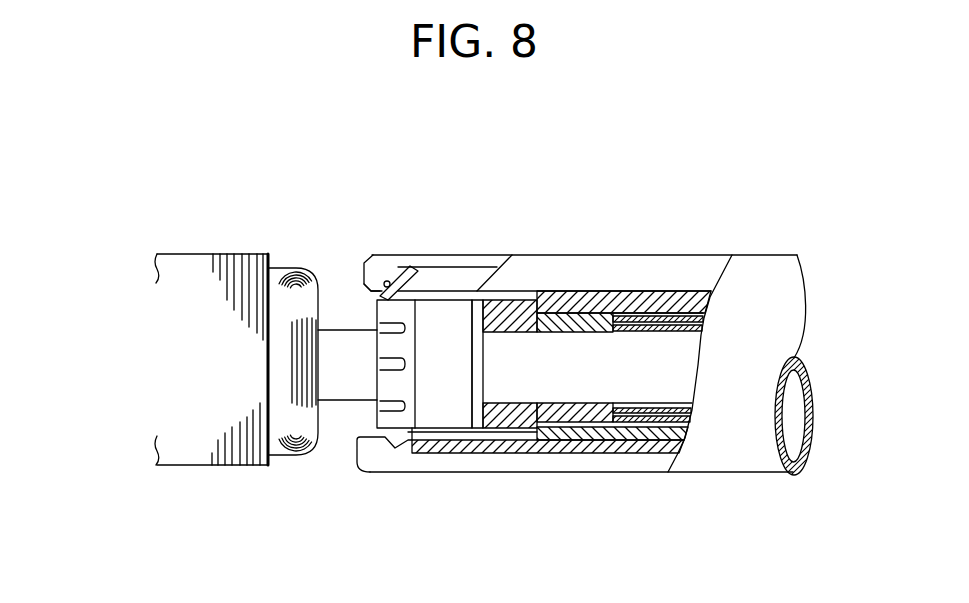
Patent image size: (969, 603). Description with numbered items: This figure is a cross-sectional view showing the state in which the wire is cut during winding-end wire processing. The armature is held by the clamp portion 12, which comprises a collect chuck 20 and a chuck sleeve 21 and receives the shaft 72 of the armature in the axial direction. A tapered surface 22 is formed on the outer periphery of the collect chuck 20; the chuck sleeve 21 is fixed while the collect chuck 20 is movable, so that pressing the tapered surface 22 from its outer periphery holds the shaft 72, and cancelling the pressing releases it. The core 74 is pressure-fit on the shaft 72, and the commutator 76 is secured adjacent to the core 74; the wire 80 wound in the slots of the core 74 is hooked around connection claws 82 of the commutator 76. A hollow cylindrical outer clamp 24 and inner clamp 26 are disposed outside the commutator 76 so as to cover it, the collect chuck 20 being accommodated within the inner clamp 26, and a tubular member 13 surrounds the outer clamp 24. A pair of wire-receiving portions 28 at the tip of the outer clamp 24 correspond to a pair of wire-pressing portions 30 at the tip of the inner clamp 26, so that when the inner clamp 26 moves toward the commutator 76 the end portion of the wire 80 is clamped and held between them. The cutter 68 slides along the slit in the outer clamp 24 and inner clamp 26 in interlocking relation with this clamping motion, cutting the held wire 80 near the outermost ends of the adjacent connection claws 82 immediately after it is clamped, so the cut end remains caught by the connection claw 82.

The clamp portion 12 is at (357, 232).
The tubular member 13 is at (770, 270).
The collect chuck 20 is at (495, 420).
The chuck sleeve 21 is at (700, 305).
The tapered surface 22 is at (580, 440).
The outer clamp 24 is at (452, 278).
The inner clamp 26 is at (543, 448).
The wire-receiving portion 28 is at (375, 268).
The wire-pressing portion 30 is at (414, 273).
The cutter 68 is at (647, 270).
The shaft 72 is at (335, 400).
The core 74 is at (174, 450).
The commutator 76 is at (453, 412).
The wire 80 is at (378, 291).
The connection claw 82 is at (392, 283).